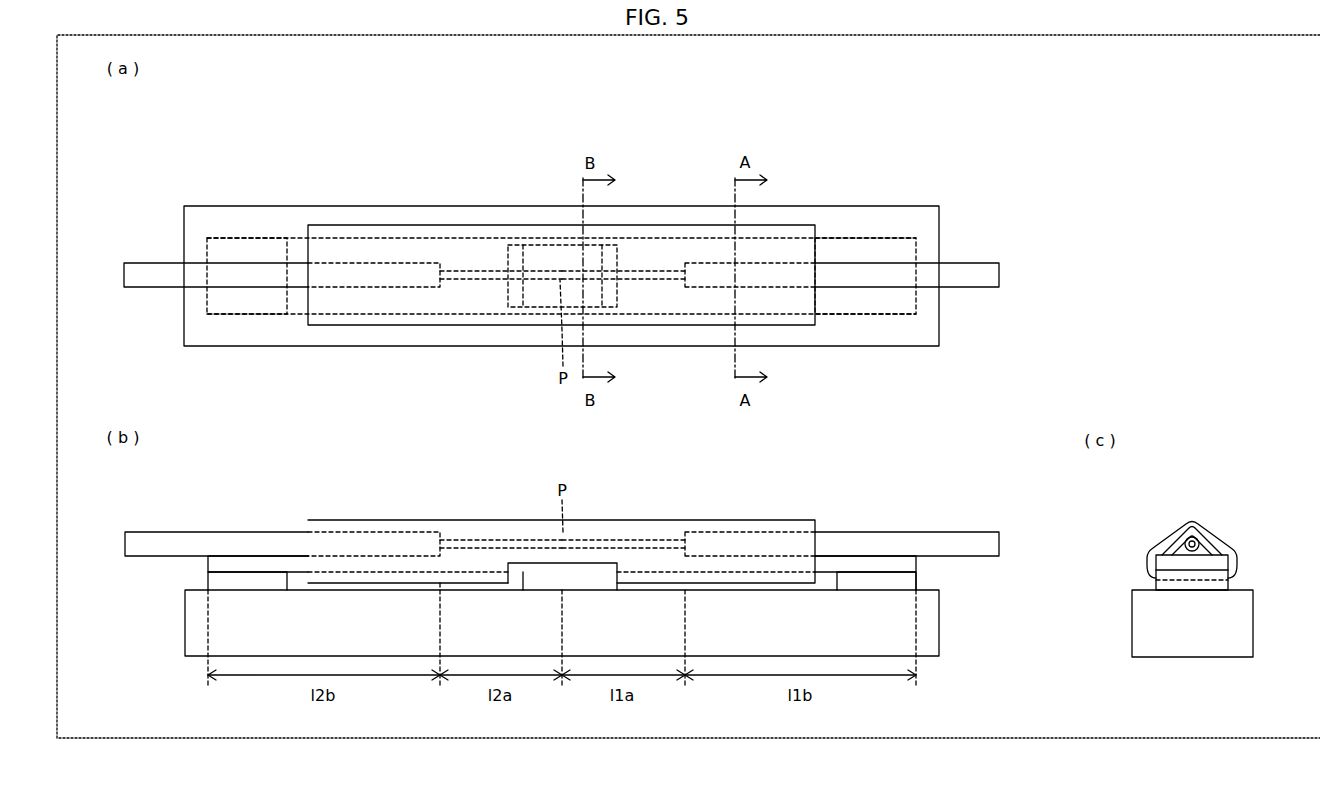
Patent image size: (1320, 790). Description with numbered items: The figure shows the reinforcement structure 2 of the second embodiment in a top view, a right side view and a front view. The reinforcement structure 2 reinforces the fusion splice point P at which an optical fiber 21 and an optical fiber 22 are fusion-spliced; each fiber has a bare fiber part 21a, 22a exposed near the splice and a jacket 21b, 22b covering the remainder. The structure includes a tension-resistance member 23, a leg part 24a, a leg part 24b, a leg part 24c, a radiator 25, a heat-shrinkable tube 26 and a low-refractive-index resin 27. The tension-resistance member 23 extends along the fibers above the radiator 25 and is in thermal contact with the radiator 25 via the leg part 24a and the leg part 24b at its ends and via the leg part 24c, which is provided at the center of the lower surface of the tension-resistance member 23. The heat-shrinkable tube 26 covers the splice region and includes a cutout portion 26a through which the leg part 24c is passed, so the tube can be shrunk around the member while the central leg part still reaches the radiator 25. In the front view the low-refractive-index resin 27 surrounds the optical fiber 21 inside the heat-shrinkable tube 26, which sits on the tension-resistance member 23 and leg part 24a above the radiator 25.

The reinforcement structure 2 is at (972, 188).
The optical fiber 21 is at (936, 343).
The bare fiber part 21a is at (660, 272).
The jacket 21b is at (705, 263).
The optical fiber 22 is at (307, 344).
The bare fiber part 22a is at (470, 272).
The jacket 22b is at (428, 264).
The tension-resistance member 23 is at (830, 238).
The leg part 24a is at (868, 240).
The leg part 24b is at (245, 238).
The leg part 24c is at (557, 245).
The radiator 25 is at (785, 206).
The heat-shrinkable tube 26 is at (350, 225).
The cutout portion 26a is at (510, 245).
The low-refractive-index resin 27 is at (1160, 550).